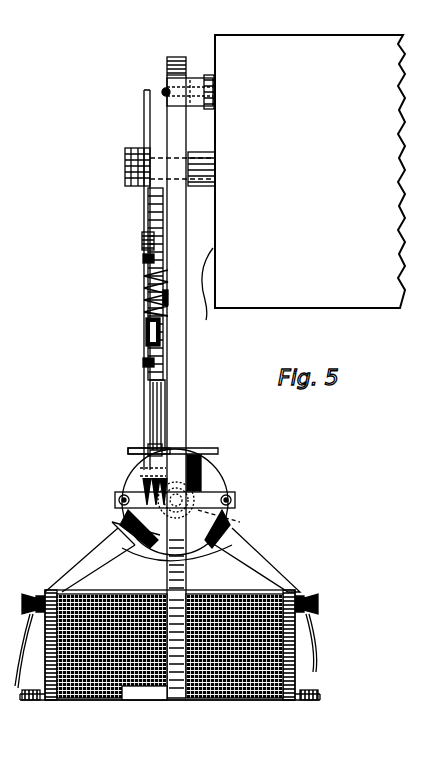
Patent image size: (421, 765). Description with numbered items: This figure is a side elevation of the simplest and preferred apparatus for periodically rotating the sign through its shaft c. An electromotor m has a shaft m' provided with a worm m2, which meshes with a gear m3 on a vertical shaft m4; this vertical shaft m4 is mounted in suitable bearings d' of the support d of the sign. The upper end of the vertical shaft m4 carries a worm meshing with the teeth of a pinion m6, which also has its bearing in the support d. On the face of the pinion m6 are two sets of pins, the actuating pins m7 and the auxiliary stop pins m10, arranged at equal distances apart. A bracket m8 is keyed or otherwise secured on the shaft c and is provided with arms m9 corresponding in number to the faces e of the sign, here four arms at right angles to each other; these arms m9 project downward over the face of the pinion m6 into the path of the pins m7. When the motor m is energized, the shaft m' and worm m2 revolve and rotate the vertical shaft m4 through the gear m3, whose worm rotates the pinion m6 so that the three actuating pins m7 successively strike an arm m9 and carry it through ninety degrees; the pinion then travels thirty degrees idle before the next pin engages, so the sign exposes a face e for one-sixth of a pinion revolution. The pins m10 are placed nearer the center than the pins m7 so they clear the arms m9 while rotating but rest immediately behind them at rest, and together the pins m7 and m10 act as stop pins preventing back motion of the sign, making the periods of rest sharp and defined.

The support d is at (176, 374).
The bearings d' is at (137, 386).
The face e is at (330, 35).
The shaft c is at (125, 167).
The rod a is at (206, 294).
The electromotor m is at (182, 611).
The shaft m' is at (187, 535).
The worm m2 is at (192, 500).
The gear m3 is at (142, 480).
The vertical shaft m4 is at (152, 402).
The pinion m6 is at (197, 371).
The actuating-pins m7 is at (143, 361).
The bracket m8 is at (133, 150).
The arms m9 is at (142, 243).
The auxiliary stop-pins m10 is at (147, 312).